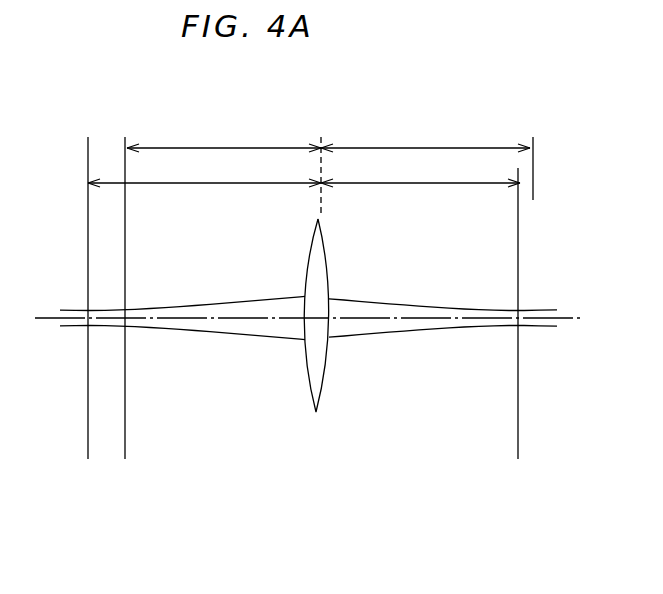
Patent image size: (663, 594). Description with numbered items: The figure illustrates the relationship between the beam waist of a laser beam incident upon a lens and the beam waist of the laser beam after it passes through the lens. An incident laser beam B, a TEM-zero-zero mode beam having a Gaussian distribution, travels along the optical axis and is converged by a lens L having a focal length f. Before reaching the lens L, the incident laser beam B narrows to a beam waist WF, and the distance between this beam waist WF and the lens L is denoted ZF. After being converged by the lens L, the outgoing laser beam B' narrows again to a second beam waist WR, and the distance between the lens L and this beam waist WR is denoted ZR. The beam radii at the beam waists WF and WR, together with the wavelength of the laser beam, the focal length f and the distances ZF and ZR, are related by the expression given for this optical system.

The laser beam B is at (182, 340).
The outgoing laser beam B' is at (443, 342).
The lens L is at (320, 400).
The beam waist of incident laser beam WF is at (93, 318).
The beam waist of outgoing laser beam WR is at (519, 333).
The focal length f is at (330, 161).
The distance between incident beam waist and lens ZF is at (204, 171).
The distance between lens and outgoing beam waist ZR is at (420, 171).